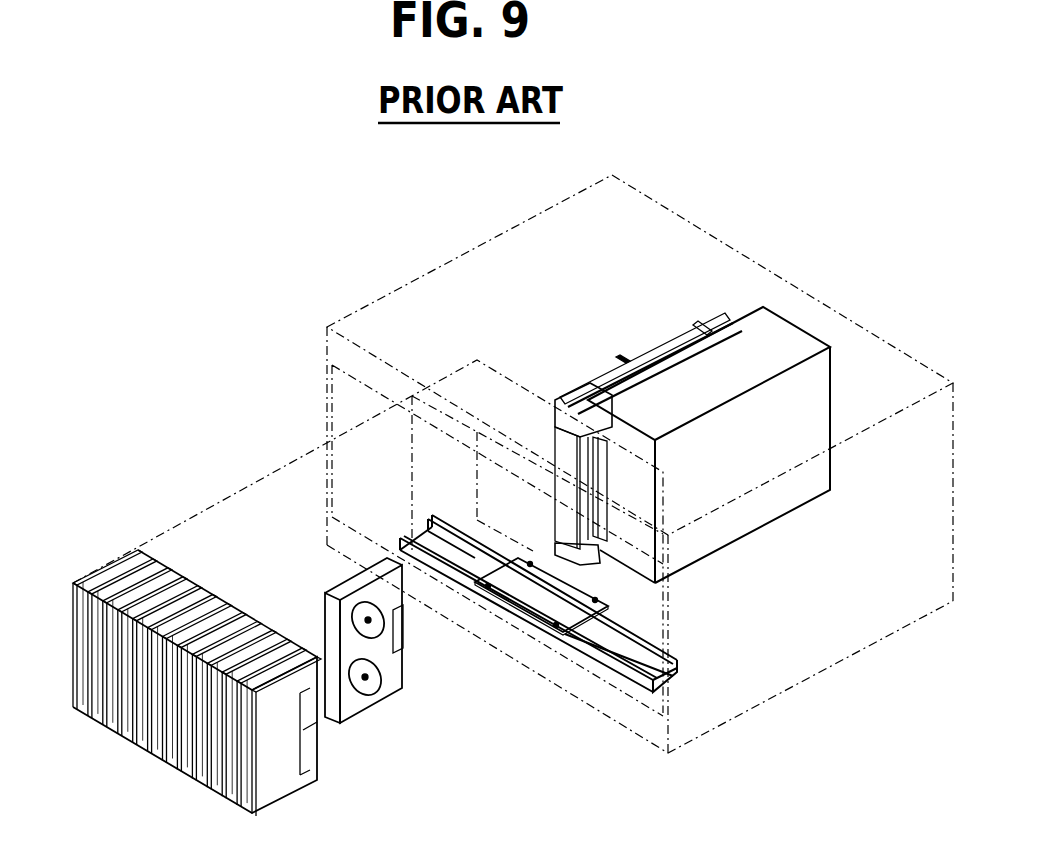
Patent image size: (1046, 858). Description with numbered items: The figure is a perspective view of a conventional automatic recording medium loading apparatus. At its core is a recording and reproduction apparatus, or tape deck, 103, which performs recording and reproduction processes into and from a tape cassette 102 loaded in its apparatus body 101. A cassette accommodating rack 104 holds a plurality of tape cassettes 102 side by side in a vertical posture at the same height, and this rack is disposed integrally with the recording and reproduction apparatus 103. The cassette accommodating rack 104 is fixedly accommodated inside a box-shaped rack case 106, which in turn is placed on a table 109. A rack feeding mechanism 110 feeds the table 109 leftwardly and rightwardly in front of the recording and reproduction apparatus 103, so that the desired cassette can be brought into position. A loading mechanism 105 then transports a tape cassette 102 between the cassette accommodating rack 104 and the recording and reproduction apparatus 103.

The apparatus body 101 is at (730, 411).
The tape cassette 102 is at (358, 702).
The recording and reproduction apparatus (tape deck) 103 is at (773, 340).
The cassette accommodating rack 104 is at (273, 785).
The loading mechanism 105 is at (647, 345).
The rack case 106 is at (452, 368).
The table 109 is at (533, 600).
The rack feeding mechanism 110 is at (638, 682).